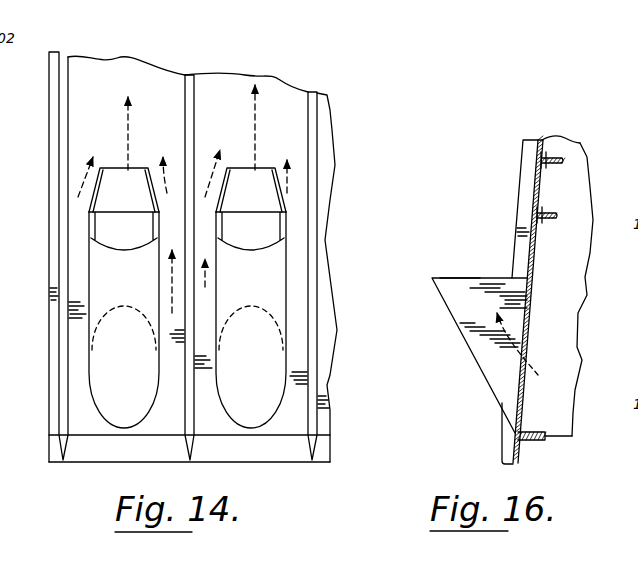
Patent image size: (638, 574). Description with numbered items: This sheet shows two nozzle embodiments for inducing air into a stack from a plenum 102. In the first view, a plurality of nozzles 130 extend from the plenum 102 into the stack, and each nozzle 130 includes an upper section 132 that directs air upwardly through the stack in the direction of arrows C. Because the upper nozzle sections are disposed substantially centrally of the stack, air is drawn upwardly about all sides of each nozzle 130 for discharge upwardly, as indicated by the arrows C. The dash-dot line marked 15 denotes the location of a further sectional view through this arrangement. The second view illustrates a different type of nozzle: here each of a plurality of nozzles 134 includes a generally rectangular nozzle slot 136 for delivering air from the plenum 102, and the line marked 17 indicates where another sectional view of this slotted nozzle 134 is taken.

In FIG. 14, the plenum 102 is at (297, 413).
In FIG. 16, the plenum 102 is at (555, 332).
In FIG. 14, the nozzle 130 is at (89, 278).
In FIG. 14, the upper section 132 is at (115, 168).
In FIG. 16, the nozzle 134 is at (486, 352).
In FIG. 16, the nozzle slot 136 is at (460, 278).
In FIG. 14, the section line 15 is at (92, 145).
In FIG. 16, the section line 17 is at (423, 268).
In FIG. 14, the arrows C is at (256, 123).